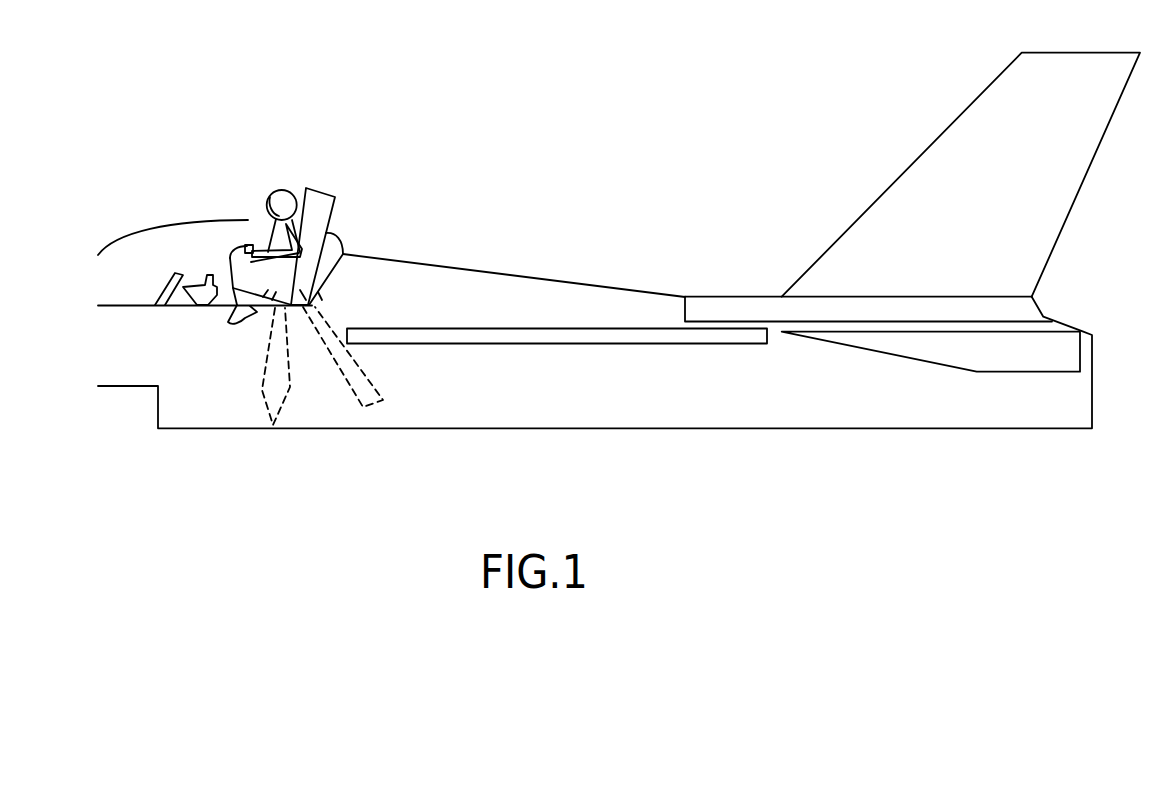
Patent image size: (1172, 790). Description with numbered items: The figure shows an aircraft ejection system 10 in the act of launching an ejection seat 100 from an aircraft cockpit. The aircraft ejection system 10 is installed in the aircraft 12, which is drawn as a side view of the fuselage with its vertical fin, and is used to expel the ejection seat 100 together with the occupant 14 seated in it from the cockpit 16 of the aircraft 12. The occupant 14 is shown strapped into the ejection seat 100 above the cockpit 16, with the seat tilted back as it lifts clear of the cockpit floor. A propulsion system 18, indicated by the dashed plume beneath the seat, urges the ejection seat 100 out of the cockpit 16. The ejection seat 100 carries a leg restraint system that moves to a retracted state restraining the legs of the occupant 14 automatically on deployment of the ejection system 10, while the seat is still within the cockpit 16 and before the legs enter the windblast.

The aircraft ejection system 10 is at (501, 152).
The aircraft 12 is at (632, 388).
The occupant 14 is at (271, 203).
The cockpit 16 is at (136, 280).
The propulsion system 18 is at (272, 370).
The ejection seat 100 is at (322, 206).